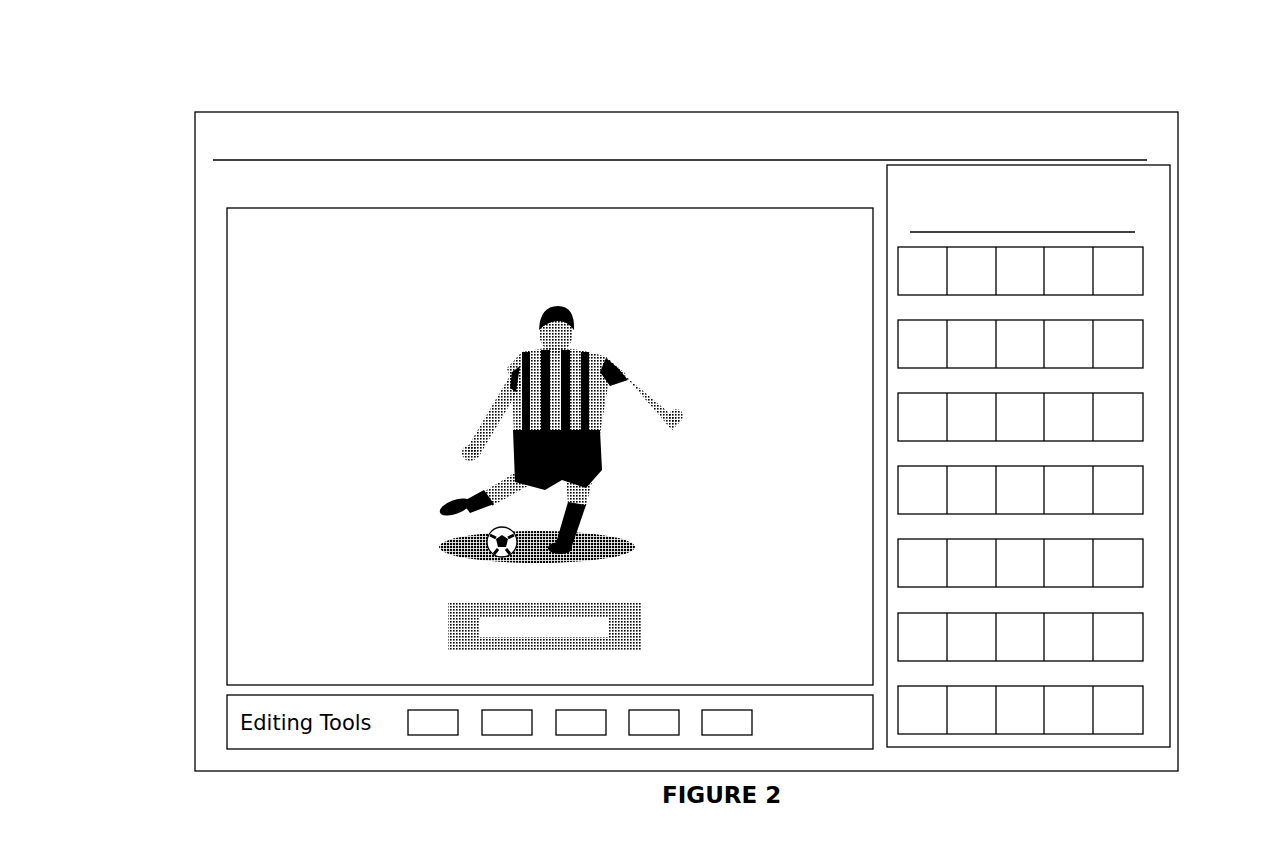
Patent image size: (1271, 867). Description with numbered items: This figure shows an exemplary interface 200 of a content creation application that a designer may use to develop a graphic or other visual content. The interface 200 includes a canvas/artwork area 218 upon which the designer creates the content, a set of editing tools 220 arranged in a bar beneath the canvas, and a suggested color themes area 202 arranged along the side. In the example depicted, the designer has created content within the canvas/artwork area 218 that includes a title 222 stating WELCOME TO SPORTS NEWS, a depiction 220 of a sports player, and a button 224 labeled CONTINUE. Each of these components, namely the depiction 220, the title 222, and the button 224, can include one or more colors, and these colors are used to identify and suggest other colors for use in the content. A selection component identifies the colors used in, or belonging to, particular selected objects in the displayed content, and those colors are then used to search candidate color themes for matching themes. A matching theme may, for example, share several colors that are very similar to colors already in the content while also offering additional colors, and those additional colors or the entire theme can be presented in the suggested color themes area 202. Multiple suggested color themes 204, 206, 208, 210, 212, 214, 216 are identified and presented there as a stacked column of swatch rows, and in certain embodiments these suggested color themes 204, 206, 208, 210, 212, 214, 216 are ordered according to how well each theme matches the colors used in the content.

The interface 200 is at (1050, 100).
The suggested color themes area 202 is at (1172, 188).
The suggested color theme 204 is at (1105, 270).
The suggested color theme 206 is at (1105, 343).
The suggested color theme 208 is at (1105, 416).
The suggested color theme 210 is at (1105, 489).
The suggested color theme 212 is at (1105, 562).
The suggested color theme 214 is at (1105, 636).
The suggested color theme 216 is at (1105, 709).
The canvas/artwork area 218 is at (227, 243).
The depiction of a sports player 220 is at (440, 548).
The title 222 is at (370, 266).
The button 224 is at (472, 611).